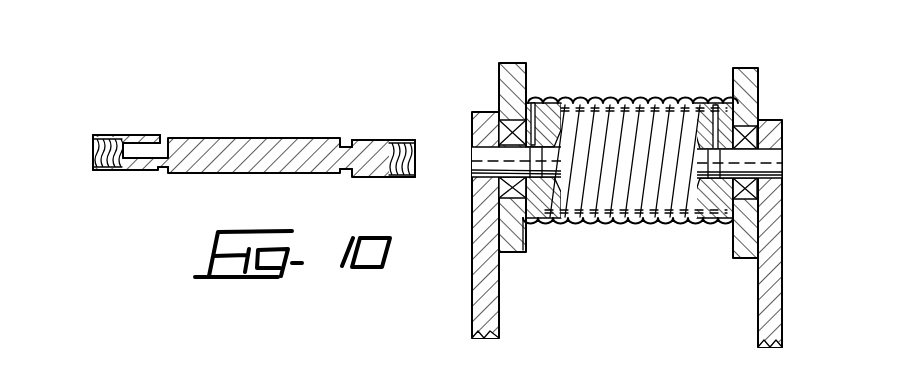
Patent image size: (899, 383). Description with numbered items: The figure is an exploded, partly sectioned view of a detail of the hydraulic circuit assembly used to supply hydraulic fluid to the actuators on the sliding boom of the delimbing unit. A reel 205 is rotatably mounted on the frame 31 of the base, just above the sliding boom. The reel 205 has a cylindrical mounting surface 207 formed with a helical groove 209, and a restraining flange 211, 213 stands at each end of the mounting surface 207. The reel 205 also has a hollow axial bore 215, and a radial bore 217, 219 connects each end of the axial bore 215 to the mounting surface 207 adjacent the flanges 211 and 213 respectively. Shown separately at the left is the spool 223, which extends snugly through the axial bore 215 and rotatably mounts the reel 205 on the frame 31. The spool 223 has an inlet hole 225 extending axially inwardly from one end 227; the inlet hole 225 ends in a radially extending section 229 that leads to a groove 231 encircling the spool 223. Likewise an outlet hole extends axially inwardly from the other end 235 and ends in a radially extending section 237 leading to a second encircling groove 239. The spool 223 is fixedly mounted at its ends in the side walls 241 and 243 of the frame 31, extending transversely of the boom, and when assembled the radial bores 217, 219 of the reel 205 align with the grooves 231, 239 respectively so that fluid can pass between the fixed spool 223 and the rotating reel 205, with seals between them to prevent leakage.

The frame 31 is at (784, 344).
The reel 205 is at (630, 160).
The cylindrical mounting surface 207 is at (625, 226).
The helical groove 209 is at (578, 226).
The restraining flange 211 is at (527, 41).
The restraining flange 213 is at (742, 68).
The axial bore 215 is at (730, 173).
The radial bore 217 is at (533, 115).
The radial bore 219 is at (728, 117).
The spool 223 is at (203, 129).
The inlet hole 225 is at (100, 166).
The end of the spool 227 is at (93, 140).
The radially extending section 229 is at (151, 135).
The groove 231 is at (166, 171).
The other end of the spool 235 is at (428, 140).
The radially extending section 237 is at (360, 141).
The groove 239 is at (348, 177).
The side wall 241 is at (782, 312).
The side wall 243 is at (470, 313).